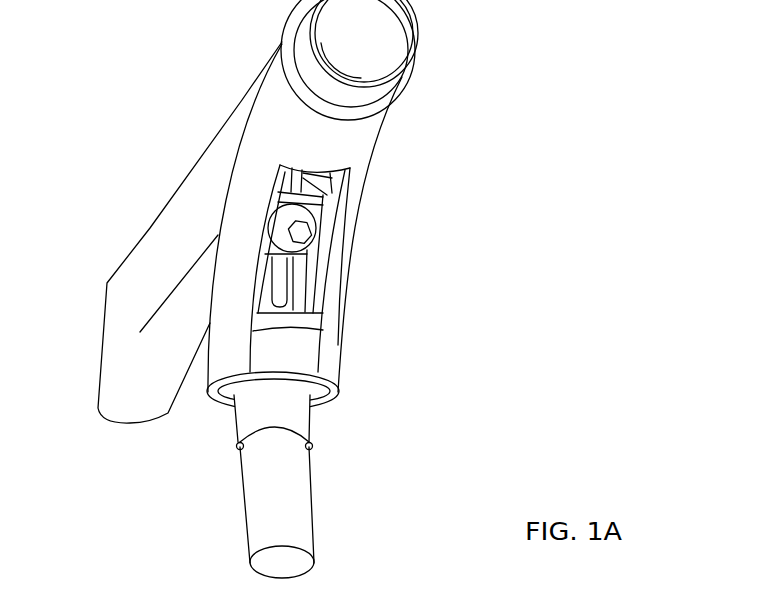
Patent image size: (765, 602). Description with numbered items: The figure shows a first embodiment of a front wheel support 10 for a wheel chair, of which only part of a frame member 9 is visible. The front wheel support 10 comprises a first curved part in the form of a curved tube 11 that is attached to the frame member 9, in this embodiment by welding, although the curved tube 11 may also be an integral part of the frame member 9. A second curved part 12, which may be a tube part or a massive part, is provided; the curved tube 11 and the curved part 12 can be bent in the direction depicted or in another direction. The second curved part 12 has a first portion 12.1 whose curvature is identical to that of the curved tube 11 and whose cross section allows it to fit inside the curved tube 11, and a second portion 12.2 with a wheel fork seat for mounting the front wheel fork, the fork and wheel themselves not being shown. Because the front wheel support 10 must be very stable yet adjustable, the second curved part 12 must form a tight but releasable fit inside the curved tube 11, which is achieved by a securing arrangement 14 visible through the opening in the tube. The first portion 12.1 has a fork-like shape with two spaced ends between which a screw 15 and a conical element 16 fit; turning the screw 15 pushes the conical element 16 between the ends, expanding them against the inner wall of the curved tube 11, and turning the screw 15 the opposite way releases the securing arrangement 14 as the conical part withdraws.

The frame member 9 is at (167, 199).
The front wheel support 10 is at (314, 289).
The first curved tube 11 is at (369, 162).
The second curved part 12 is at (273, 485).
The first portion 12.1 is at (247, 425).
The second portion 12.2 is at (284, 511).
The securing arrangement 14 is at (327, 238).
The screw 15 is at (307, 218).
The conical element 16 is at (320, 209).